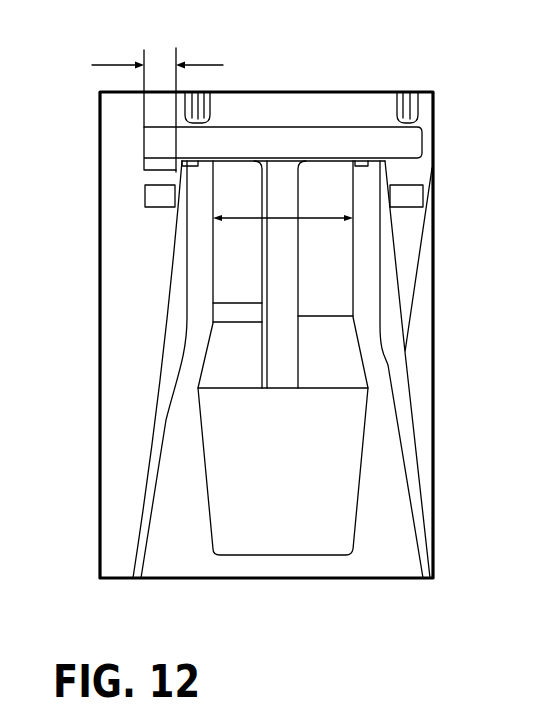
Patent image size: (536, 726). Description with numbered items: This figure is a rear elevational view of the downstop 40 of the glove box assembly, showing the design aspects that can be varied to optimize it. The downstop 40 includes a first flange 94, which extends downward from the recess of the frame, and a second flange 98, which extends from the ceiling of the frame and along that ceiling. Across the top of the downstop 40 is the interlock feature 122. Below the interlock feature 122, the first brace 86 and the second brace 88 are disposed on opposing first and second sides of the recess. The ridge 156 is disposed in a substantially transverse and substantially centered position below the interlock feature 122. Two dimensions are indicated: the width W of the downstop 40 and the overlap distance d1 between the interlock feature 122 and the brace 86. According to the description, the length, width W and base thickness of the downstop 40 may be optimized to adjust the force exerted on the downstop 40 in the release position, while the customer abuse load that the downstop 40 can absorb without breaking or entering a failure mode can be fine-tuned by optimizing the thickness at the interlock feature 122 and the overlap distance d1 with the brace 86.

The overlap distance d1 is at (110, 65).
The second flange 98 is at (210, 141).
The interlock feature 122 is at (288, 143).
The first brace 86 is at (152, 197).
The second brace 88 is at (403, 197).
The width W is at (284, 222).
The downstop 40 is at (236, 273).
The first flange 94 is at (317, 268).
The ridge 156 is at (282, 368).